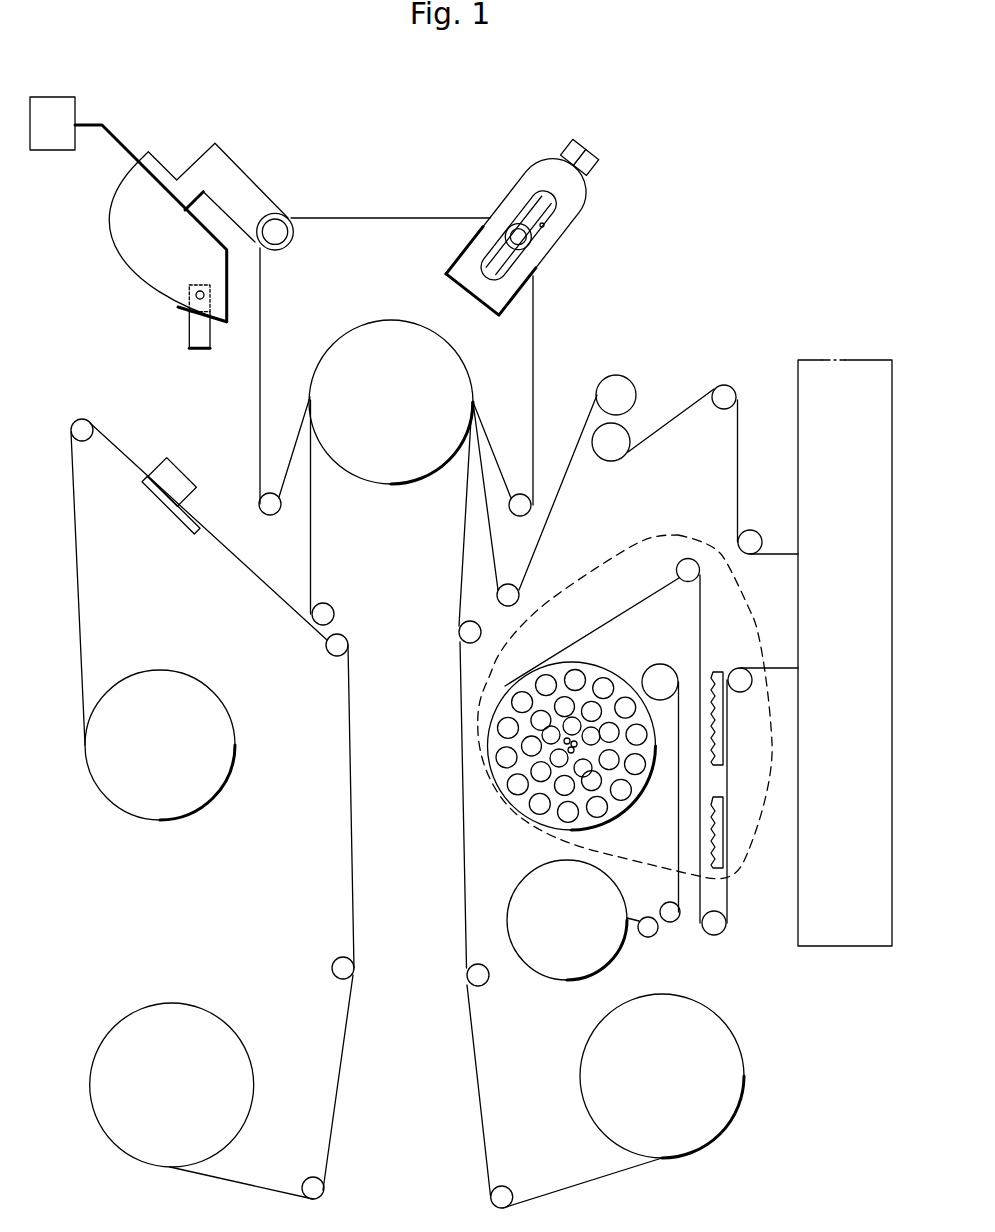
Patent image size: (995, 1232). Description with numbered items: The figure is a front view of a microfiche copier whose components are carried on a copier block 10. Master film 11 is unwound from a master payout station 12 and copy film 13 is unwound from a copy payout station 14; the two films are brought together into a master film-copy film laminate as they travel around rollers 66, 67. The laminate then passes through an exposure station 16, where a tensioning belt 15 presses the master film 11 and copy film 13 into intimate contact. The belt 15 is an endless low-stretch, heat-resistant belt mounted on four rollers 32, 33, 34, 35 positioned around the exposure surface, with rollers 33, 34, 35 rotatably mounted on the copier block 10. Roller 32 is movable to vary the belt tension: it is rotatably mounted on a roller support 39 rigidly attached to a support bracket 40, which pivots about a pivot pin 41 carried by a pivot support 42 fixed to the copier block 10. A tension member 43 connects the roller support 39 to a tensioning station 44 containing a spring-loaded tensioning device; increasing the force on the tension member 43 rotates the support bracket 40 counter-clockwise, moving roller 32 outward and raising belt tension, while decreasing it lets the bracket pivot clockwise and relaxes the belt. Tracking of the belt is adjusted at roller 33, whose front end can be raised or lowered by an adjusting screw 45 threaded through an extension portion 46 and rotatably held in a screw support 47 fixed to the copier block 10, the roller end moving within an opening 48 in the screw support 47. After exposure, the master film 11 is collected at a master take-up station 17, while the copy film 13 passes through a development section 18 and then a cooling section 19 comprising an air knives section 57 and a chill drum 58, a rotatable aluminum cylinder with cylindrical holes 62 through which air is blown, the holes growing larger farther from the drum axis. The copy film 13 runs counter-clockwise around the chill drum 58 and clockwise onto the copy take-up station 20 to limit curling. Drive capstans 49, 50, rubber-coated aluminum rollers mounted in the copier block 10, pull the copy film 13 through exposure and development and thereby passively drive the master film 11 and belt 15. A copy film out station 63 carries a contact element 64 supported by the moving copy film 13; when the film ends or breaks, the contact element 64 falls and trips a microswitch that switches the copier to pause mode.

The copier block 10 is at (359, 83).
The master film 11 is at (217, 1180).
The master payout station 12 is at (176, 1105).
The copy film 13 is at (78, 605).
The copy payout station 14 is at (170, 758).
The tensioning belt 15 is at (260, 432).
The exposure station 16 is at (378, 452).
The master take-up station 17 is at (670, 1098).
The development section 18 is at (813, 393).
The cooling section 19 is at (736, 615).
The copy take-up station 20 is at (580, 933).
The roller 32 is at (277, 228).
The roller 33 is at (507, 222).
The roller 34 is at (523, 508).
The roller 35 is at (268, 500).
The roller support 39 is at (224, 165).
The support bracket 40 is at (137, 262).
The pivot pin 41 is at (196, 302).
The pivot support 42 is at (200, 333).
The tension member 43 is at (120, 143).
The tensioning station 44 is at (67, 113).
The adjusting screw 45 is at (537, 205).
The extension portion 46 is at (523, 240).
The screw support 47 is at (575, 203).
The opening 48 is at (542, 225).
The drive capstan 49 is at (612, 447).
The drive capstan 50 is at (652, 937).
The air knives section 57 is at (723, 735).
The chill drum 58 is at (535, 728).
The cylindrical holes 62 is at (575, 670).
The copy film out station 63 is at (168, 467).
The contact element 64 is at (193, 503).
The roller 66 is at (330, 608).
The roller 67 is at (346, 648).